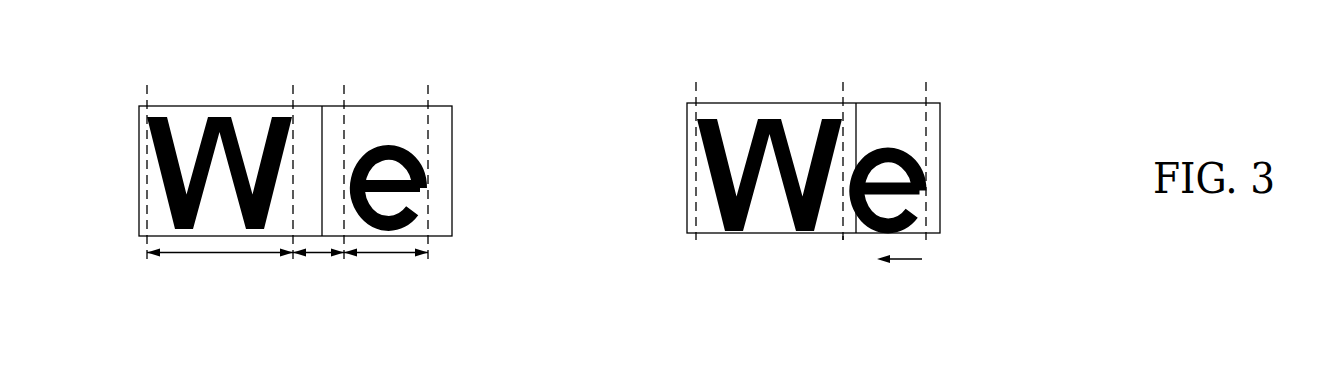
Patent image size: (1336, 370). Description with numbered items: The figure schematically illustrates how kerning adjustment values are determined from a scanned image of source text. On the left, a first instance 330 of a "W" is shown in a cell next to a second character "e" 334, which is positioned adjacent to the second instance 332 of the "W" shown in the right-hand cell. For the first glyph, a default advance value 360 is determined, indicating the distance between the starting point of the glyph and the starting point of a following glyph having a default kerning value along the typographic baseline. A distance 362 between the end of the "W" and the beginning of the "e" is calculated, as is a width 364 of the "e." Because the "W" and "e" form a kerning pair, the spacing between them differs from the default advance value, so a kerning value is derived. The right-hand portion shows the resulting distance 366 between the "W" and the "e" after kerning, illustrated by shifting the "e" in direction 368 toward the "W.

The first instance of a "W" 330 is at (210, 54).
The second instance of the "W" 332 is at (378, 54).
The second character "e" 334 is at (899, 61).
The default advance value 360 is at (214, 256).
The distance between an end of the "W" and a beginning of the "e" 362 is at (320, 256).
The width of the "e" 364 is at (395, 257).
The distance between the "W" and "e" after kerning 366 is at (850, 238).
The direction 368 is at (910, 262).